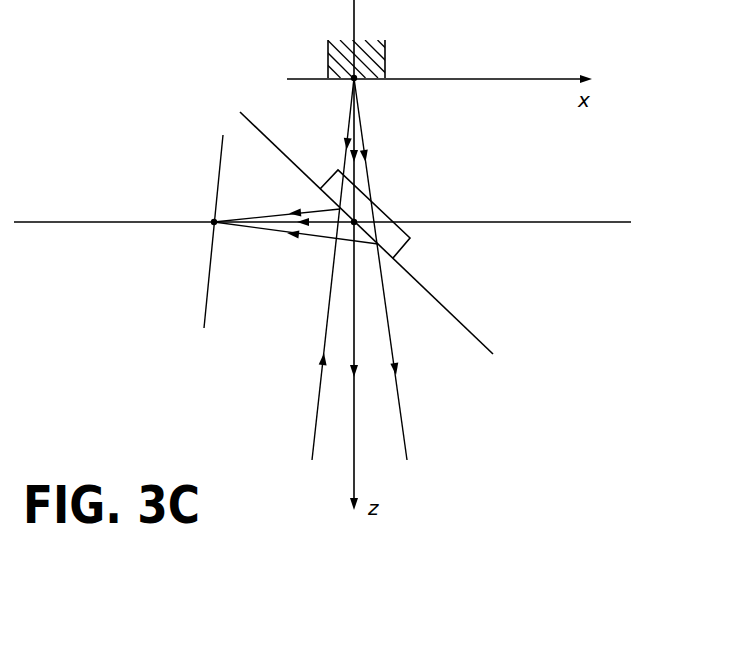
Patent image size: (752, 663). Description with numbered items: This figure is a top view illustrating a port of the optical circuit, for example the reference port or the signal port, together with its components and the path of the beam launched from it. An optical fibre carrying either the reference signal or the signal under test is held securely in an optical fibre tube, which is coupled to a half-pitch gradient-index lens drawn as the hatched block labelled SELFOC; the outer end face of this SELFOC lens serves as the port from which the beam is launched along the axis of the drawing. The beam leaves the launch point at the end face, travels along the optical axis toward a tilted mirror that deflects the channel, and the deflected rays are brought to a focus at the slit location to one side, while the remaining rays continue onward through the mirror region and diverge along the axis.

The SELFOC gradient-index lens SELFOC is at (327, 58).